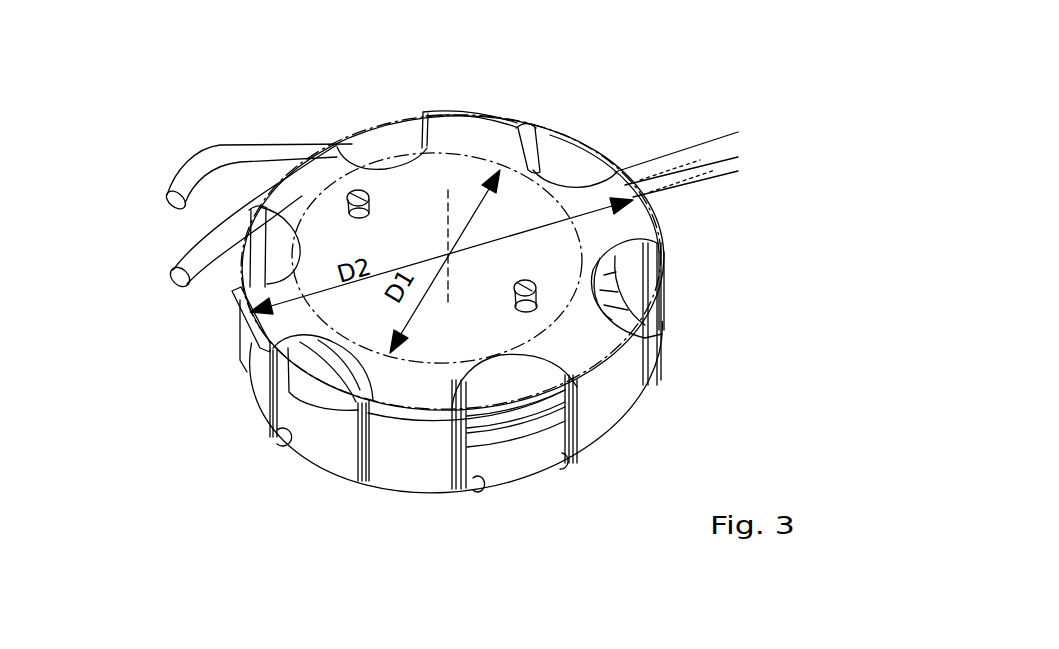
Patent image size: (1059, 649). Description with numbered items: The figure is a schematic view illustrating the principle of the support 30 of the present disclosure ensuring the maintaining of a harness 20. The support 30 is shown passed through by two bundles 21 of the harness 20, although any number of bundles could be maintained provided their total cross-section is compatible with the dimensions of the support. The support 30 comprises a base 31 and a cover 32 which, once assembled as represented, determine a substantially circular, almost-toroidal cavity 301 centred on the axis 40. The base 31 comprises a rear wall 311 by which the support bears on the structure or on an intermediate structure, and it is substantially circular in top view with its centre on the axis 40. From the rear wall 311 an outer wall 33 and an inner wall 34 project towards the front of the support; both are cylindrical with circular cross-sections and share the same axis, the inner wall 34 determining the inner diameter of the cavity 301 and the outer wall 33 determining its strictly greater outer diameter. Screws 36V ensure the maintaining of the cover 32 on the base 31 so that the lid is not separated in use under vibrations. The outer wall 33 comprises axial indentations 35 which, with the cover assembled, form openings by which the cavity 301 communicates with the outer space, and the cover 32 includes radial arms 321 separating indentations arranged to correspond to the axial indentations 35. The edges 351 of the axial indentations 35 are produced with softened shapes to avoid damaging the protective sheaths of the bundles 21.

The support 30 is at (185, 110).
The base 31 is at (422, 497).
The rear wall 311 is at (324, 452).
The cover 32 is at (489, 108).
The radial arm 321 is at (320, 637).
The outer wall 33 is at (610, 407).
The inner wall 34 is at (593, 147).
The axial indentation 35 is at (390, 132).
The screw 36V is at (357, 192).
The harness 20 is at (708, 140).
The bundle 21 is at (228, 148).
The almost-toroidal cavity 301 is at (275, 243).
The edge of axial indentation 351 is at (660, 290).
The axis 40 is at (455, 290).